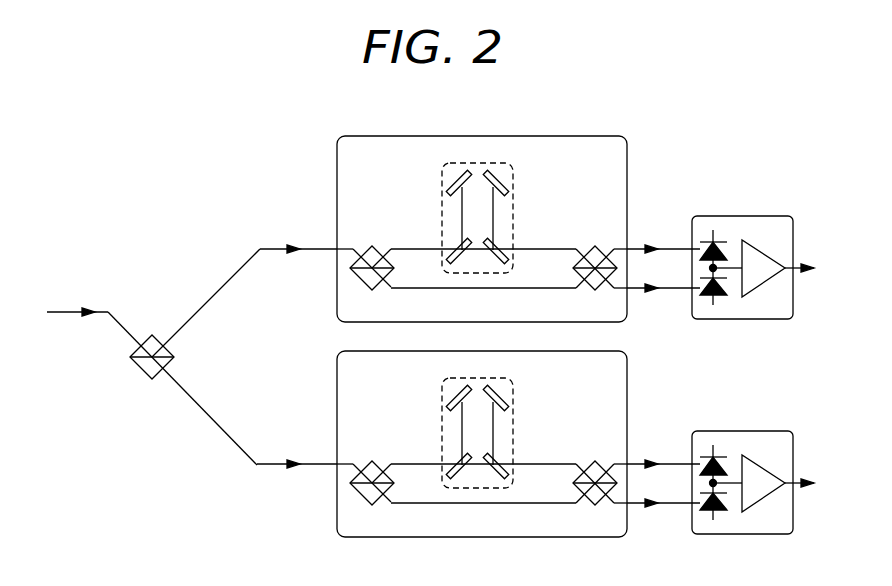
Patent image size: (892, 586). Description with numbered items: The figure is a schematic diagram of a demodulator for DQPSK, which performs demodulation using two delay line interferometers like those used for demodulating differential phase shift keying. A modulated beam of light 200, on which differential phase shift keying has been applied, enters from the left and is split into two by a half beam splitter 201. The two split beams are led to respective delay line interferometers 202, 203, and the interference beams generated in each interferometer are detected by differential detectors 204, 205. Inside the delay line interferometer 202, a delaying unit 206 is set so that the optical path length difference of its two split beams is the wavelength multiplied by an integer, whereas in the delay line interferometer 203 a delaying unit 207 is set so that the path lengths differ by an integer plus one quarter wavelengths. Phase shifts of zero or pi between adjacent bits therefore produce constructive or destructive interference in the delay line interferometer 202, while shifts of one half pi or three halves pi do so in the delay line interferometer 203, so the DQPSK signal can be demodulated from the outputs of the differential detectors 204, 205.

The modulated beam of light 200 is at (63, 308).
The half beam splitter 201 is at (153, 335).
The delay line interferometer 202 is at (517, 229).
The delay line interferometer 203 is at (517, 444).
The differential detector 204 is at (743, 216).
The differential detector 205 is at (753, 452).
The delaying unit 206 is at (515, 182).
The delaying unit 207 is at (511, 433).